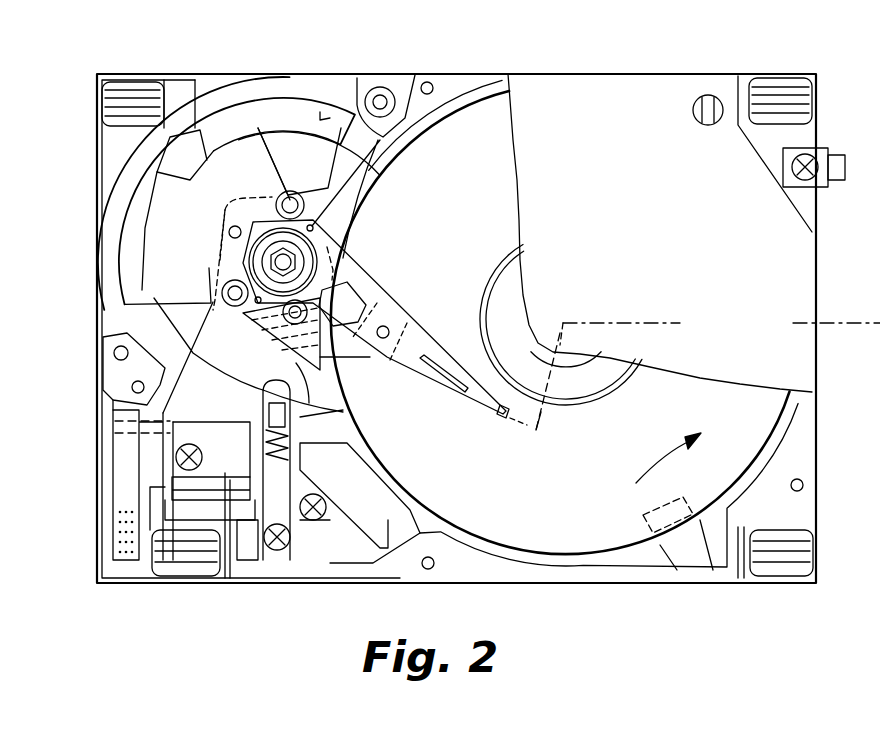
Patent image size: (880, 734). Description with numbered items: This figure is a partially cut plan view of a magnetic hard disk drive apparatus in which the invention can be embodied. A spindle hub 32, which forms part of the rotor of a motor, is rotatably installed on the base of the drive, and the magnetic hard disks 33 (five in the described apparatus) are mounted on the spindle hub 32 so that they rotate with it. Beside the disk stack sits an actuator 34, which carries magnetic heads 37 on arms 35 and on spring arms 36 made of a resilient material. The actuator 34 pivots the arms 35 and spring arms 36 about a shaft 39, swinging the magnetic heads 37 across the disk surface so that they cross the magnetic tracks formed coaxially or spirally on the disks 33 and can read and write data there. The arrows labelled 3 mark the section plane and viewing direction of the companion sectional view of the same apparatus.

The spindle hub 32 is at (594, 408).
The magnetic hard disk 33 is at (498, 479).
The actuator 34 is at (294, 78).
The arm 35 is at (357, 288).
The spring arm 36 is at (406, 368).
The magnetic head 37 is at (496, 417).
The shaft 39 is at (270, 261).
The section line 3- 3 is at (140, 167).